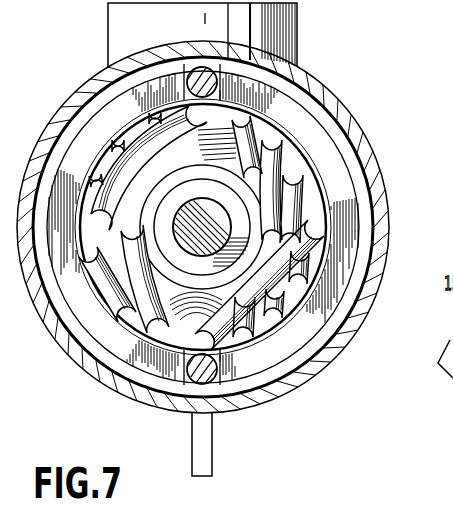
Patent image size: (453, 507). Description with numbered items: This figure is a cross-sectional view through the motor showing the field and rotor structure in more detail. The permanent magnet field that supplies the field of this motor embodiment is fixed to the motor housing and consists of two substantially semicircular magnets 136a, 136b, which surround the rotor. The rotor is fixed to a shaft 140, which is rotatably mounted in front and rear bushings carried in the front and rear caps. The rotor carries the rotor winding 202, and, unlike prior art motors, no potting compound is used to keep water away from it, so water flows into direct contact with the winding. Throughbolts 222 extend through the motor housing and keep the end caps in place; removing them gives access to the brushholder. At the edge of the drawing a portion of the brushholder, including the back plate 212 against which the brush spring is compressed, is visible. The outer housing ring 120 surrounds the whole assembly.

The outer housing ring 120 is at (390, 229).
The semicircular magnet 136a is at (340, 195).
The semicircular magnet 136b is at (88, 316).
The shaft 140 is at (206, 237).
The rotor winding 202 is at (282, 177).
The throughbolts 222 is at (203, 78).
The back plate 212 is at (452, 398).